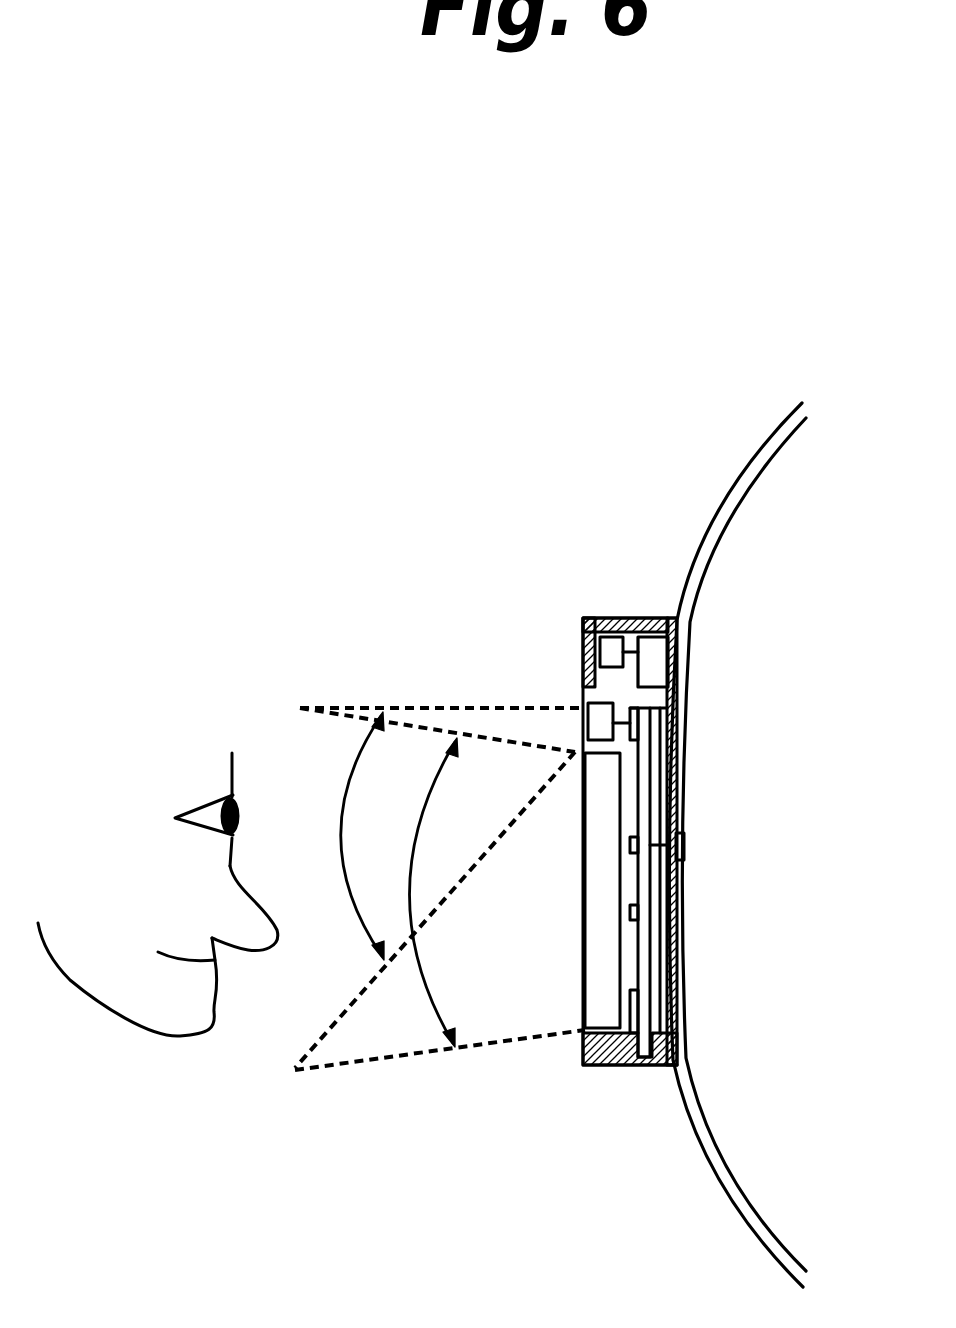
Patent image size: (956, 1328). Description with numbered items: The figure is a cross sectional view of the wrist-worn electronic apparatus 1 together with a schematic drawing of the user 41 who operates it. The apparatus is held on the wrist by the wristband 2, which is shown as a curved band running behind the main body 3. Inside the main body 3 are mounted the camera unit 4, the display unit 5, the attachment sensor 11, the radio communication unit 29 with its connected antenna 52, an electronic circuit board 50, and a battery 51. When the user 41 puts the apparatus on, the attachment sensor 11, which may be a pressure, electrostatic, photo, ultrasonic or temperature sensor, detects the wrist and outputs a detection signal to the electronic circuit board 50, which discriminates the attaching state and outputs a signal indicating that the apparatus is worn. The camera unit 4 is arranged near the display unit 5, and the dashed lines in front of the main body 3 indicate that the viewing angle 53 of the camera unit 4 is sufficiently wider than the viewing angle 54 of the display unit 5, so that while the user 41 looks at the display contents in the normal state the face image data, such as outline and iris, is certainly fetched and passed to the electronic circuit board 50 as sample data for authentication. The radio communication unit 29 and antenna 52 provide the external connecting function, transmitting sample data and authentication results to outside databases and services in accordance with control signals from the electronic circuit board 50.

The electronic apparatus 1 is at (626, 383).
The wristband 2 is at (703, 552).
The main body 3 is at (598, 1068).
The camera unit 4 is at (597, 712).
The display unit 5 is at (598, 968).
The attachment sensor 11 is at (684, 842).
The radio communication unit 29 is at (652, 660).
The user 41 is at (127, 720).
The electronic circuit board 50 is at (650, 1060).
The battery 51 is at (677, 1000).
The antenna 52 is at (594, 645).
The viewing angle of the camera unit 53 is at (440, 889).
The viewing angle of the display unit 54 is at (413, 892).